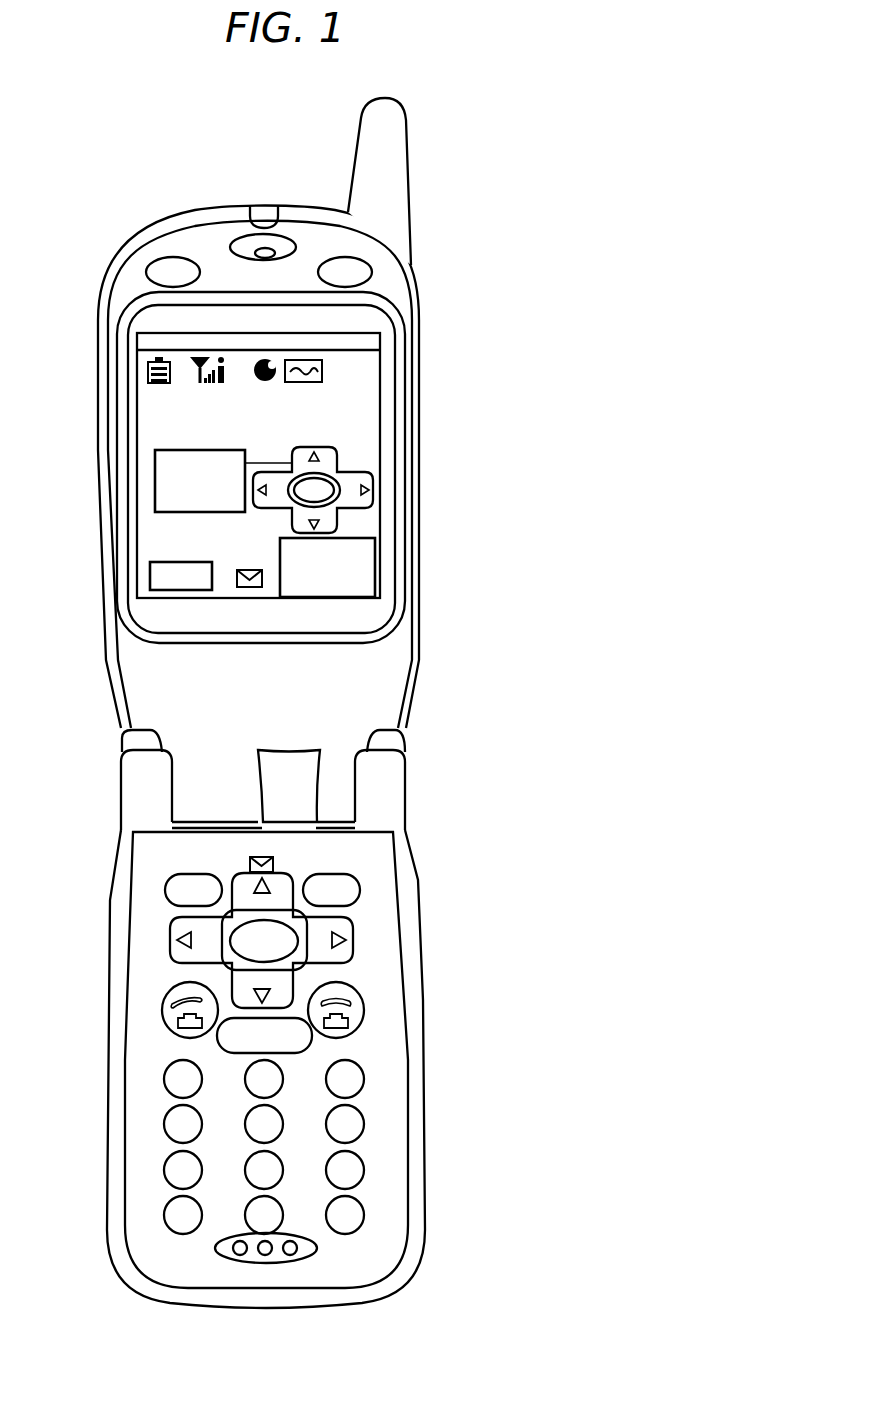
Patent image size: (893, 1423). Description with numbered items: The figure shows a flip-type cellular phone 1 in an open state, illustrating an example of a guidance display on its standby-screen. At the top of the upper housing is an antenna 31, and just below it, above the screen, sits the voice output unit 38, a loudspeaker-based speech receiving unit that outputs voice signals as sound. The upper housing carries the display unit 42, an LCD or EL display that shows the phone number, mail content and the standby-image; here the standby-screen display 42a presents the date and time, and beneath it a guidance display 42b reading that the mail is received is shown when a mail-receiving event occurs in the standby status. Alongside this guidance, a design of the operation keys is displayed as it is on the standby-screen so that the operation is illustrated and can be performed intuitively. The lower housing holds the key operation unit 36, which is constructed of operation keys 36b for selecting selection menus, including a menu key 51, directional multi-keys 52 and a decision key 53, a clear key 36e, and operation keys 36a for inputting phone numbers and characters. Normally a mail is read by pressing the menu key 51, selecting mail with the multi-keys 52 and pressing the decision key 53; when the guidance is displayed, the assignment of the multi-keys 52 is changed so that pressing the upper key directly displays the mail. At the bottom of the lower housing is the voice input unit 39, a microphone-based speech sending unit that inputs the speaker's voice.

The cellular phone 1 is at (557, 123).
The antenna 31 is at (390, 173).
The voice output unit 38 is at (283, 249).
The display unit 42 is at (254, 465).
The standby-screen display 42a is at (148, 420).
The guidance display 42b is at (150, 482).
The menu key 51 is at (175, 893).
The multi-keys 52 is at (173, 947).
The decision key 53 is at (233, 957).
The key operation unit 36 is at (321, 1046).
The operation keys 36a is at (333, 1126).
The operation keys 36b is at (281, 947).
The clear key 36e is at (222, 1042).
The voice input unit 39 is at (272, 1262).